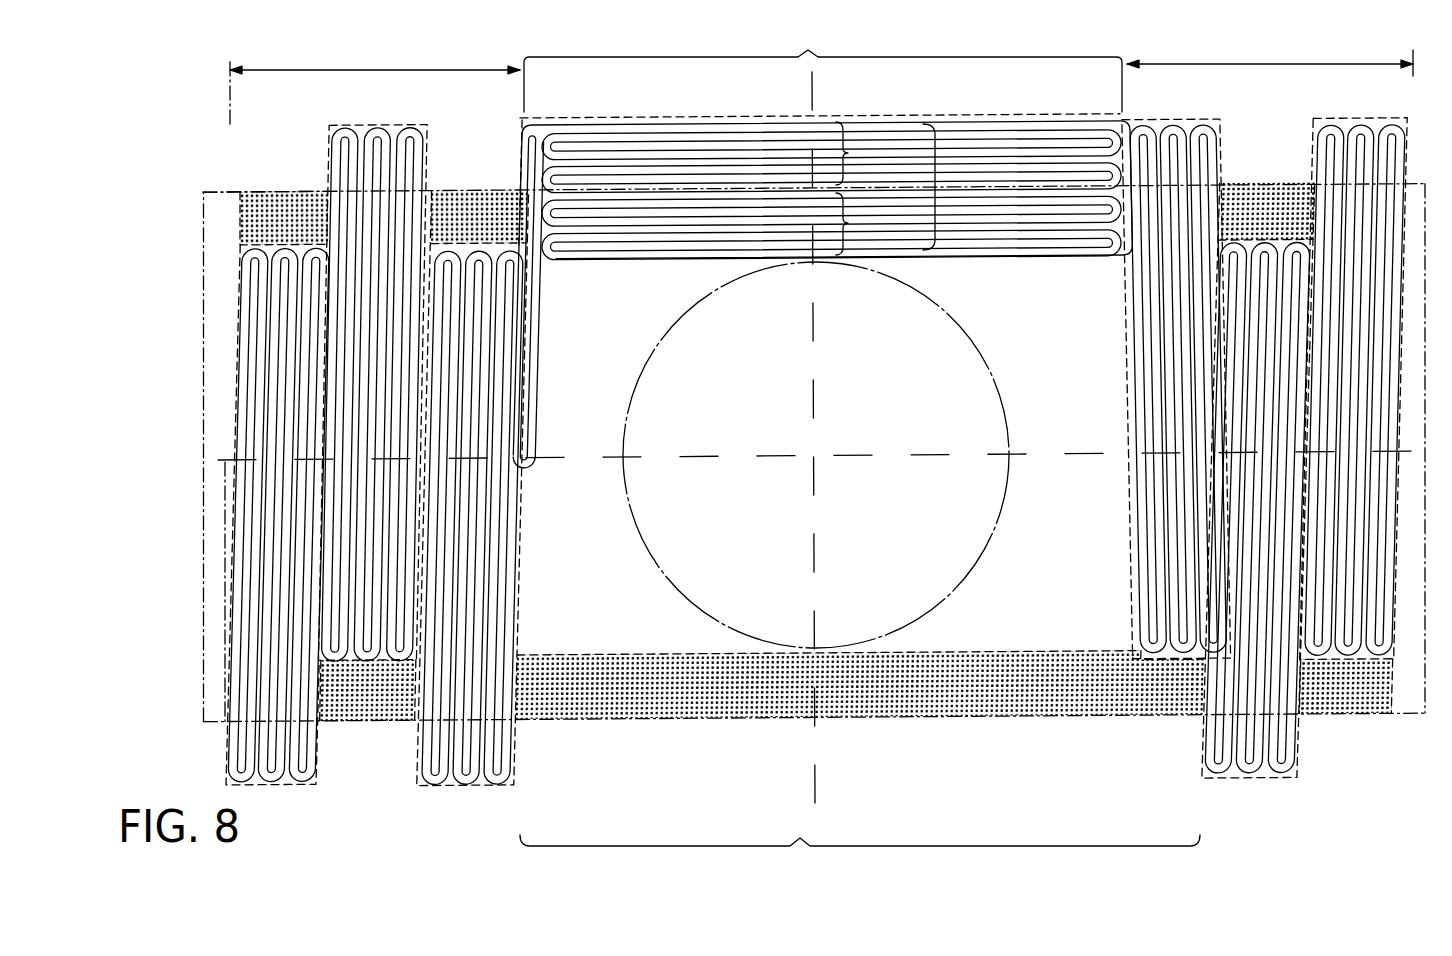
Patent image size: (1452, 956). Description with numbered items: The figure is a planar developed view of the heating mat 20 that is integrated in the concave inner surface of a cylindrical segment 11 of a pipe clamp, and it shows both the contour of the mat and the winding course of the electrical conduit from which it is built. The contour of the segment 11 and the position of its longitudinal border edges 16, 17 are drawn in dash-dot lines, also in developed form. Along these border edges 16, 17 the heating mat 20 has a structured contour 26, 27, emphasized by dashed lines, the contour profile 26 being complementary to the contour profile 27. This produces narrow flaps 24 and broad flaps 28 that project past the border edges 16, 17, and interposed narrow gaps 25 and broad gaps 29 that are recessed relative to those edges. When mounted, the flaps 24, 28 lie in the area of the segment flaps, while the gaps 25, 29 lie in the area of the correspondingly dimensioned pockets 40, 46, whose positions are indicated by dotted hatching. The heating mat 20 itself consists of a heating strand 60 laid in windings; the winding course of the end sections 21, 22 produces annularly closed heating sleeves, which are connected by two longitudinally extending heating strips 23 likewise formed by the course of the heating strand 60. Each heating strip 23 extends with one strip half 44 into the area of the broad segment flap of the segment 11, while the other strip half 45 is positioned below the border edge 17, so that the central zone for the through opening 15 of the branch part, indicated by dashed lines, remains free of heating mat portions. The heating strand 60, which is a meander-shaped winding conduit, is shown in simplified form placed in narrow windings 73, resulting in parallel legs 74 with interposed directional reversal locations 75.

The cylindrical segment 11 is at (199, 328).
The through opening 15 is at (1006, 498).
The border edge 16 is at (639, 724).
The border edge 17 is at (290, 188).
The heating mat 20 is at (1331, 771).
The end section 21 is at (340, 68).
The end section 22 is at (1245, 64).
The heating strip 23 is at (937, 170).
The narrow flap 24 is at (328, 105).
The narrow gap 25 is at (432, 103).
The contour profile 26 is at (1203, 758).
The contour profile 27 is at (652, 119).
The broad flap 28 is at (823, 67).
The broad gap 29 is at (860, 857).
The pocket 40 is at (282, 227).
The strip half 44 is at (848, 152).
The strip half 45 is at (848, 224).
The pocket 46 is at (742, 683).
The heating strand 60 is at (280, 548).
The narrow winding 73 is at (232, 773).
The parallel leg 74 is at (295, 618).
The directional reversal location 75 is at (302, 781).